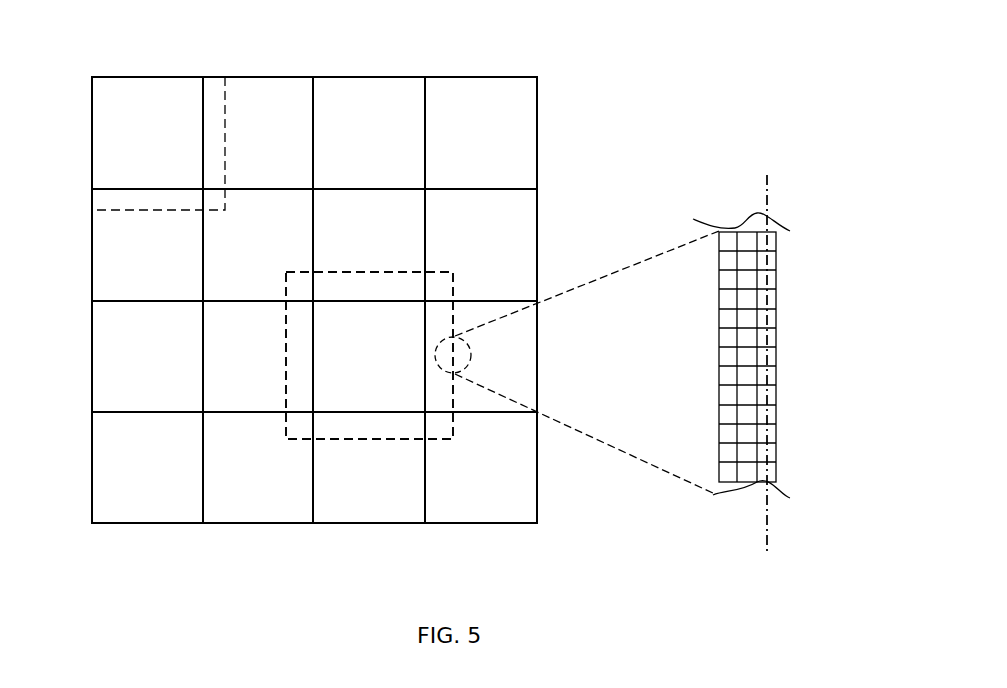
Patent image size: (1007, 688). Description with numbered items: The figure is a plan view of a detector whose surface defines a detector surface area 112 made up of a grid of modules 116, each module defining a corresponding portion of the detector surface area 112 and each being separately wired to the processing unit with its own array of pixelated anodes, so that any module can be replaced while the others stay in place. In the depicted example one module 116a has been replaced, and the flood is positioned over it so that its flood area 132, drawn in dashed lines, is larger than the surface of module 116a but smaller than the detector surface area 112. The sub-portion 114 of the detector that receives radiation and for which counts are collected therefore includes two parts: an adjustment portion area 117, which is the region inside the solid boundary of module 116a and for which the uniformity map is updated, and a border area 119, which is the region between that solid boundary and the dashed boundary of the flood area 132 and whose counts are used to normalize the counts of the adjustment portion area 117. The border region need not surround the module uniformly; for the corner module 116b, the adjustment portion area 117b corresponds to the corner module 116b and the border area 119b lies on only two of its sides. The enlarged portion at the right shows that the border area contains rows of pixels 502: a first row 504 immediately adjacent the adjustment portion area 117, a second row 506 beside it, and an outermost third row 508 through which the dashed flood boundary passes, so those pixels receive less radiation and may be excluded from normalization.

The detector surface area 112 is at (549, 62).
The sub-portion 114 is at (456, 442).
The module 116 is at (145, 504).
The module 116a is at (362, 395).
The corner module 116b is at (113, 90).
The adjustment portion area 117 is at (340, 330).
The adjustment portion area 117b is at (159, 108).
The border area 119 is at (300, 333).
The border area 119b is at (212, 100).
The flood area 132 is at (402, 266).
The pixels 502 is at (728, 415).
The first row 504 is at (711, 205).
The second row 506 is at (741, 205).
The third row 508 is at (776, 218).